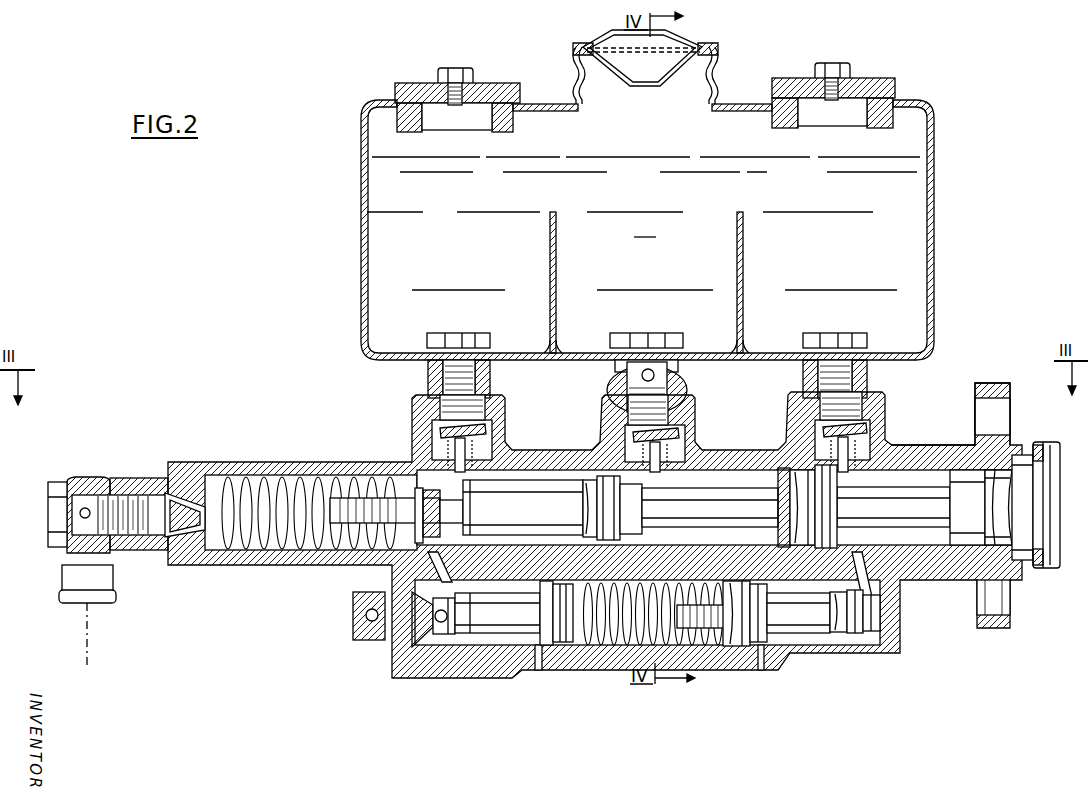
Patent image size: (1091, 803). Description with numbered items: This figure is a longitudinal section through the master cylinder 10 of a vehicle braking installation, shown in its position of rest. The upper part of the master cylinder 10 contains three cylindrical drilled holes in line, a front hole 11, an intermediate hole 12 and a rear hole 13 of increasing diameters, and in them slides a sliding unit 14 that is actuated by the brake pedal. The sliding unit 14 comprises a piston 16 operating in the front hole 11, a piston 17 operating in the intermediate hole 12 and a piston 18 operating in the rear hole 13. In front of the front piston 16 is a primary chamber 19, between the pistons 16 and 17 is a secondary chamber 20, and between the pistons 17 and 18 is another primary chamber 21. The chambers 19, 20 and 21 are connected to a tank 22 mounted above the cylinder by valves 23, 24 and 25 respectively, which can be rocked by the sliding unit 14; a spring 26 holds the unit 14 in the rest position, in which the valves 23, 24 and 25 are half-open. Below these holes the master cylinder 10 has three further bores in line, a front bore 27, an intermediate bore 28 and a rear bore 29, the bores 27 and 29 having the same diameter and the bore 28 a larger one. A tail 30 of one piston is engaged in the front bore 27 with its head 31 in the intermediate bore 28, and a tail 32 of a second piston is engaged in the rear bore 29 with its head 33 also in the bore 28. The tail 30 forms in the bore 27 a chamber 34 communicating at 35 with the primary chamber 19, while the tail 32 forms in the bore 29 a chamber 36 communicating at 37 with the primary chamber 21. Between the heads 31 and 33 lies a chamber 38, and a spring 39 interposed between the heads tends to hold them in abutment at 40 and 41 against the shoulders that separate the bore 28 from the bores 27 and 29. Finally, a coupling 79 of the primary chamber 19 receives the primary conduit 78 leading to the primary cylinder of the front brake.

The master cylinder 10 is at (357, 450).
The front hole 11 is at (525, 485).
The intermediate hole 12 is at (738, 470).
The rear hole 13 is at (932, 463).
The sliding unit 14 is at (1024, 508).
The piston 16 is at (588, 493).
The piston 17 is at (787, 490).
The piston 18 is at (968, 455).
The primary chamber 19 is at (293, 478).
The secondary chamber 20 is at (710, 473).
The primary chamber 21 is at (903, 468).
The tank 22 is at (647, 222).
The valve 23 is at (440, 446).
The valve 24 is at (617, 440).
The valve 25 is at (803, 430).
The spring 26 is at (249, 480).
The front bore 27 is at (507, 597).
The intermediate bore 28 is at (636, 597).
The rear bore 29 is at (791, 596).
The tail 30 is at (453, 600).
The head 31 is at (570, 595).
The tail 32 is at (840, 593).
The head 33 is at (731, 592).
The chamber 34 is at (418, 657).
The communication 35 is at (420, 570).
The chamber 36 is at (870, 617).
The communication 37 is at (858, 562).
The chamber 38 is at (655, 603).
The spring 39 is at (705, 587).
The abutment 40 is at (540, 643).
The abutment 41 is at (758, 643).
The primary conduit 78 is at (87, 622).
The coupling 79 is at (62, 576).